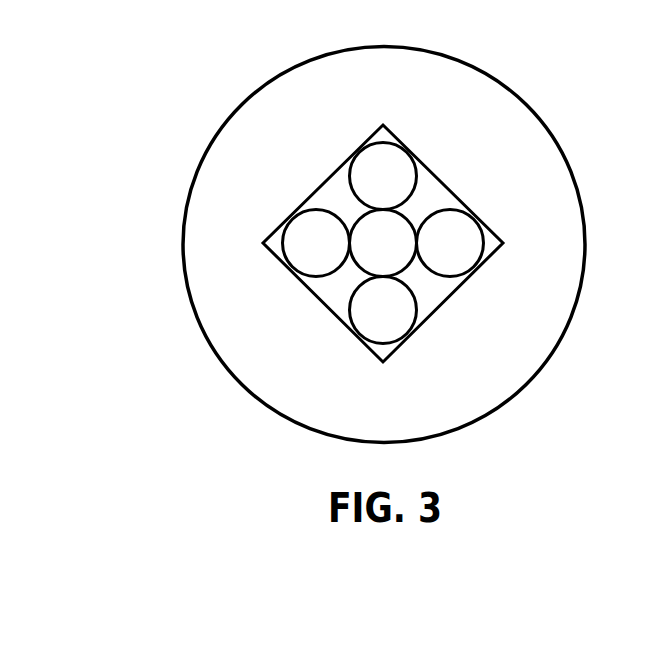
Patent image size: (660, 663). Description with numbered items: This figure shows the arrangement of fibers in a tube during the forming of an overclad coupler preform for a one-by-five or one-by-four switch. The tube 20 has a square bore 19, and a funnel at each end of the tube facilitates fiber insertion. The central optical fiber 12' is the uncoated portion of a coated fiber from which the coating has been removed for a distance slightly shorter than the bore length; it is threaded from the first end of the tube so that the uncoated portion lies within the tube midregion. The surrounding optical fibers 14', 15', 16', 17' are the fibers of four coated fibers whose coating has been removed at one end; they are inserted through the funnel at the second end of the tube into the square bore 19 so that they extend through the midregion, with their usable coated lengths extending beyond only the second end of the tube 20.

The optical fiber 12' is at (383, 243).
The optical fiber 14' is at (409, 160).
The optical fiber 15' is at (472, 234).
The optical fiber 16' is at (356, 321).
The optical fiber 17' is at (291, 233).
The square bore 19 is at (446, 298).
The tube 20 is at (538, 371).